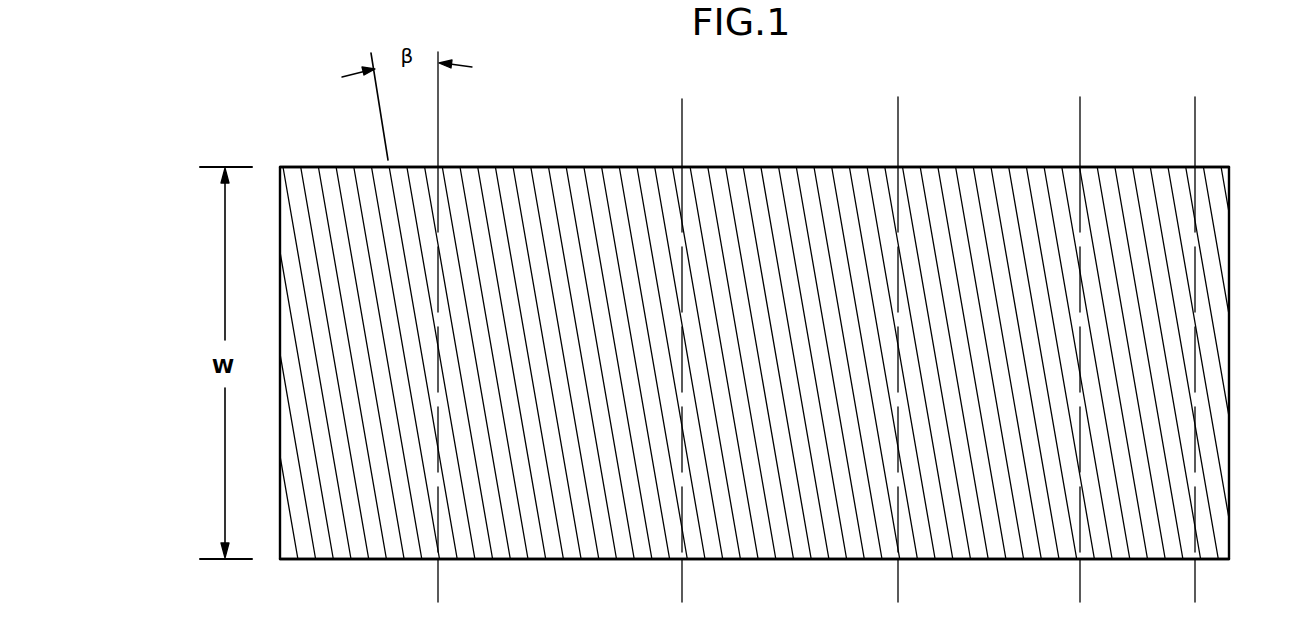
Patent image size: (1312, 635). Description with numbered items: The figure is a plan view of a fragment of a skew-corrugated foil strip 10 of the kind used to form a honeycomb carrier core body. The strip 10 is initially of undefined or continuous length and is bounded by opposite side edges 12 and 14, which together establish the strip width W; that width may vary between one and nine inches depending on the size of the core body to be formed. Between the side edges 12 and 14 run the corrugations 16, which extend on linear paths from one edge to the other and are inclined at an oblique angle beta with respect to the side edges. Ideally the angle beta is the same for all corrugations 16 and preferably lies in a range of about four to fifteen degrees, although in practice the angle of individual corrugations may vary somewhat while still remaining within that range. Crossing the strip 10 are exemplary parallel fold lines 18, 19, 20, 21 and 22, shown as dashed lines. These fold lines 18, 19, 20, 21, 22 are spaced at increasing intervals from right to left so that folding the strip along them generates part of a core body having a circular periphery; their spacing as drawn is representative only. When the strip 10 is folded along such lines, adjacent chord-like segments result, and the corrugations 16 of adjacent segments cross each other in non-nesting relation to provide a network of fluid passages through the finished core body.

The corrugated foil strip 10 is at (790, 121).
The side edge 12 is at (970, 167).
The side edge 14 is at (958, 559).
The corrugations 16 is at (592, 170).
The fold line 18 is at (1195, 114).
The fold line 19 is at (1080, 114).
The fold line 20 is at (898, 112).
The fold line 21 is at (682, 108).
The fold line 22 is at (438, 100).